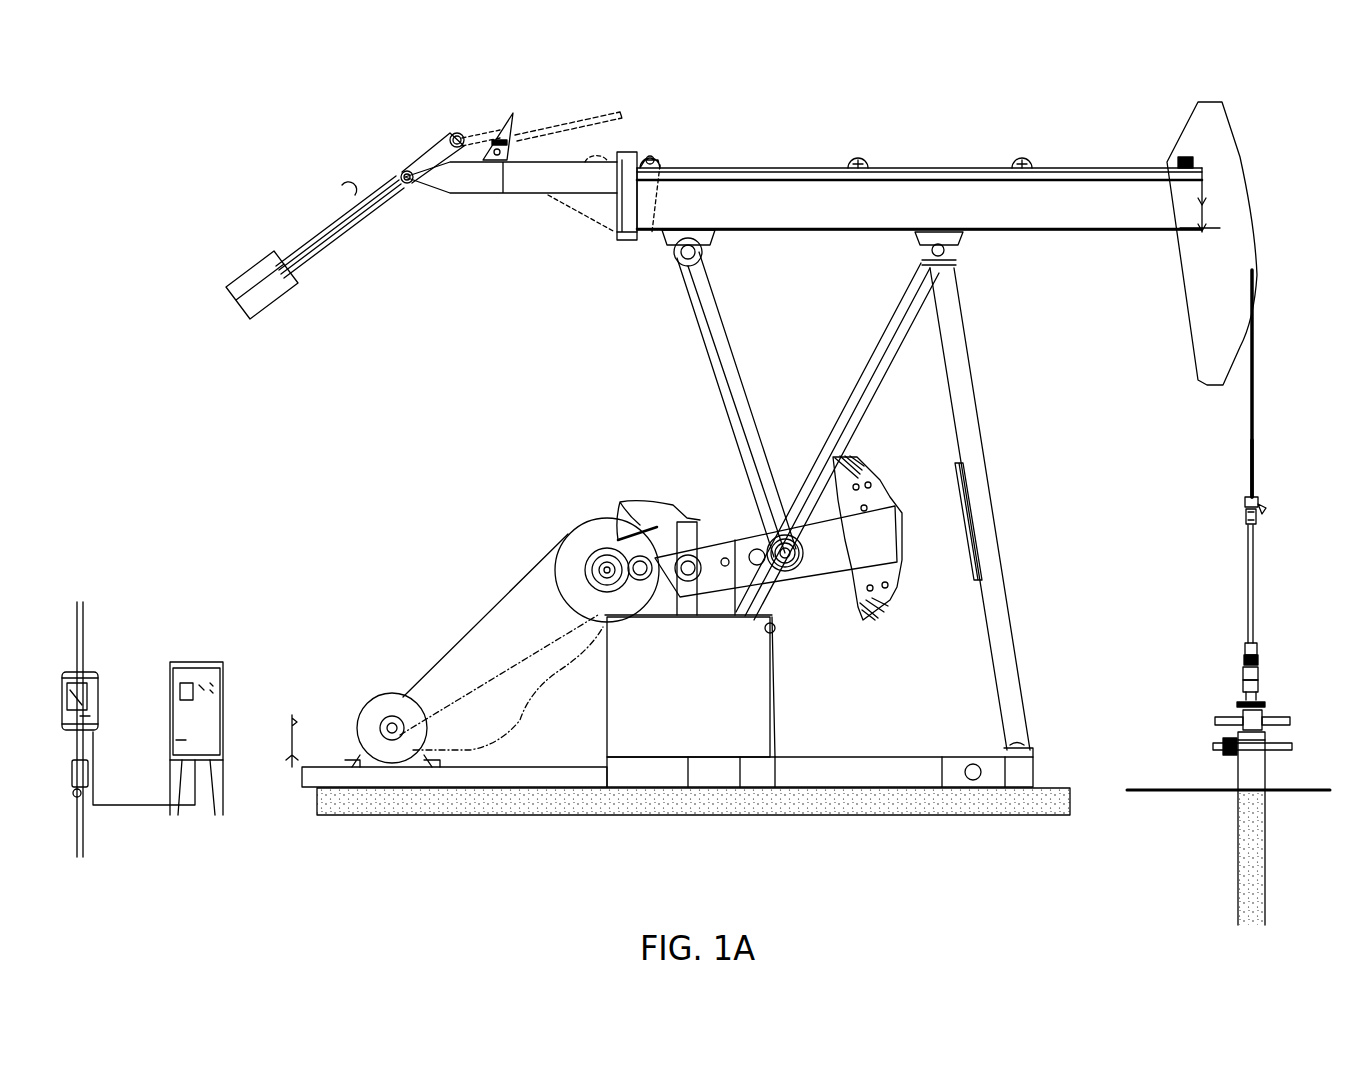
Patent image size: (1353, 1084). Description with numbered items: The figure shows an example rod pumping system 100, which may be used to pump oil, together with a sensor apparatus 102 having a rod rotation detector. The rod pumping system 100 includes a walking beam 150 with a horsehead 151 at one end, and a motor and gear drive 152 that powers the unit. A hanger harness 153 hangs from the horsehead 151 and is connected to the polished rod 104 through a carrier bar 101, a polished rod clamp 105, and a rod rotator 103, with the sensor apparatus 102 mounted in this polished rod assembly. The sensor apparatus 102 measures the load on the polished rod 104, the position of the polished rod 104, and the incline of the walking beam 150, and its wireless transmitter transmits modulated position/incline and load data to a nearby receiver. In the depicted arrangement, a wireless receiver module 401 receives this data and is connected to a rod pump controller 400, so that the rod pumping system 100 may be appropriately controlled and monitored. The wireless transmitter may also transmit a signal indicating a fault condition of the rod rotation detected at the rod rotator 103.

The rod pumping system 100 is at (304, 80).
The walking beam 150 is at (838, 187).
The horsehead 151 is at (1240, 178).
The motor and gear drive 152 is at (639, 482).
The hanger harness 153 is at (1258, 412).
The polished rod clamp 105 is at (1245, 492).
The rod rotator 103 is at (1240, 500).
The sensor apparatus 102 is at (1262, 510).
The carrier bar 101 is at (1247, 523).
The polished rod 104 is at (985, 244).
The rod pump controller 400 is at (130, 568).
The wireless receiver module 401 is at (97, 672).